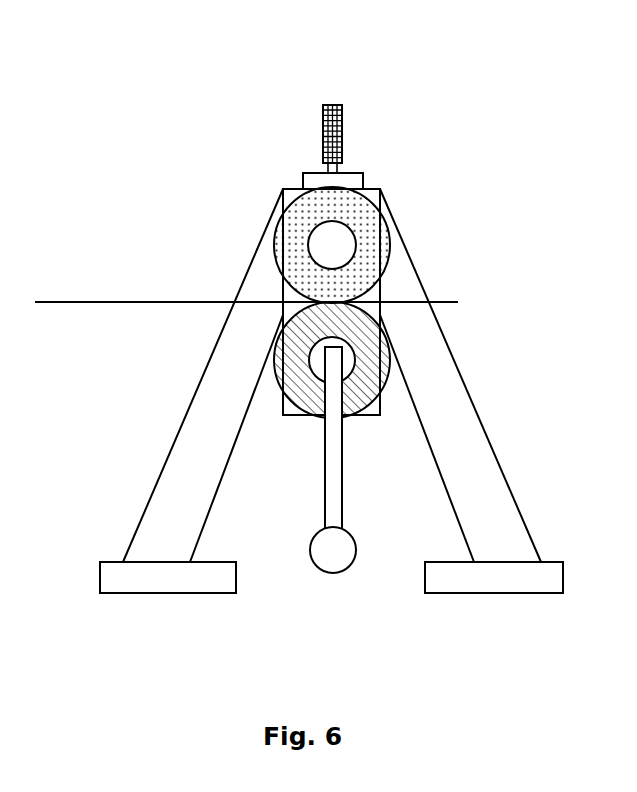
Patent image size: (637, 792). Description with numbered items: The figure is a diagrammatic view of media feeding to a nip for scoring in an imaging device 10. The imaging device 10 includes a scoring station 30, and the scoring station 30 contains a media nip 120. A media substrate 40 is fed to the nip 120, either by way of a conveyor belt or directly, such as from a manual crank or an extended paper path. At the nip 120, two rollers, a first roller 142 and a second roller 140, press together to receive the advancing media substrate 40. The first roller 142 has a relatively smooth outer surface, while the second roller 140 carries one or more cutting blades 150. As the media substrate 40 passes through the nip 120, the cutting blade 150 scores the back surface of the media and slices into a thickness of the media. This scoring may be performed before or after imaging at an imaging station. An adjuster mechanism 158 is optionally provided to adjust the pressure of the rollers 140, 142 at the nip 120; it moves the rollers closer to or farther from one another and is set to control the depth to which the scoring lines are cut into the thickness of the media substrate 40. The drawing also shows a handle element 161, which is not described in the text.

The imaging device 10 is at (95, 79).
The scoring station 30 is at (568, 613).
The media substrate 40 is at (92, 302).
The media nip 120 is at (380, 297).
The second roller 140 is at (388, 365).
The first roller 142 is at (278, 225).
The cutting blade 150 is at (296, 394).
The adjuster mechanism 158 is at (342, 120).
The handle 161 is at (323, 455).